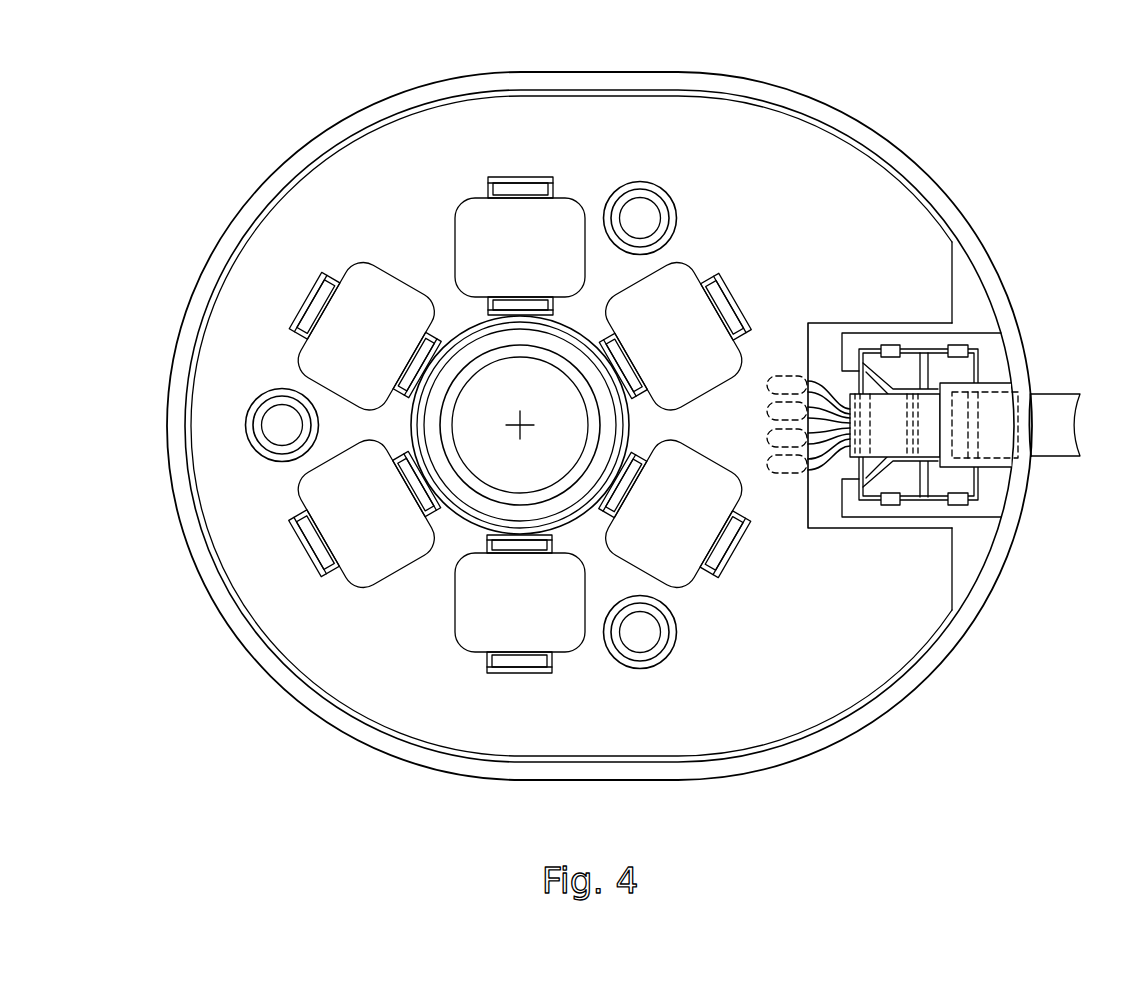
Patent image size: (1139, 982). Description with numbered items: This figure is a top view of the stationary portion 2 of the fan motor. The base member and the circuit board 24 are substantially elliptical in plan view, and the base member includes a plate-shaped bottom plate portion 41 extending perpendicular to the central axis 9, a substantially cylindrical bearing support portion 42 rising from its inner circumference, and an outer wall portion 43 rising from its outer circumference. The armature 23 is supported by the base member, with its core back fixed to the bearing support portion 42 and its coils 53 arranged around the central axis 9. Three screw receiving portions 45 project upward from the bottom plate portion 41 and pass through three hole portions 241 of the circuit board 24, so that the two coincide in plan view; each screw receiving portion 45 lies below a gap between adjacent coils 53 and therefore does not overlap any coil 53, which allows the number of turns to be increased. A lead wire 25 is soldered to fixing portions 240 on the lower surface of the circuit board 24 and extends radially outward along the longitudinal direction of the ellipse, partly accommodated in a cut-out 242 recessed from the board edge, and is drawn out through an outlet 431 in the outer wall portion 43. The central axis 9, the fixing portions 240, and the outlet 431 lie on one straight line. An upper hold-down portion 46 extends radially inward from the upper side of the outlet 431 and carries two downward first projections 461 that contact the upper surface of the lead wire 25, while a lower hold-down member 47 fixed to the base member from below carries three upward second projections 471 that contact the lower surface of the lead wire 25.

The stationary portion 2 is at (255, 124).
The central axis 9 is at (515, 418).
The armature 23 is at (440, 205).
The circuit board 24 is at (745, 165).
The lead wire 25 is at (1057, 413).
The bottom plate portion 41 is at (975, 290).
The bearing support portion 42 is at (485, 487).
The outer wall portion 43 is at (619, 426).
The screw receiving portion 45 is at (390, 426).
The upper hold-down portion 46 is at (998, 432).
The lower hold-down member 47 is at (924, 408).
The coil 53 is at (357, 330).
The fixing portion 240 is at (782, 450).
The hole portion 241 is at (633, 180).
The cut-out 242 is at (824, 343).
The outlet 431 is at (1038, 442).
The first projection 461 is at (940, 480).
The second projection 471 is at (900, 505).